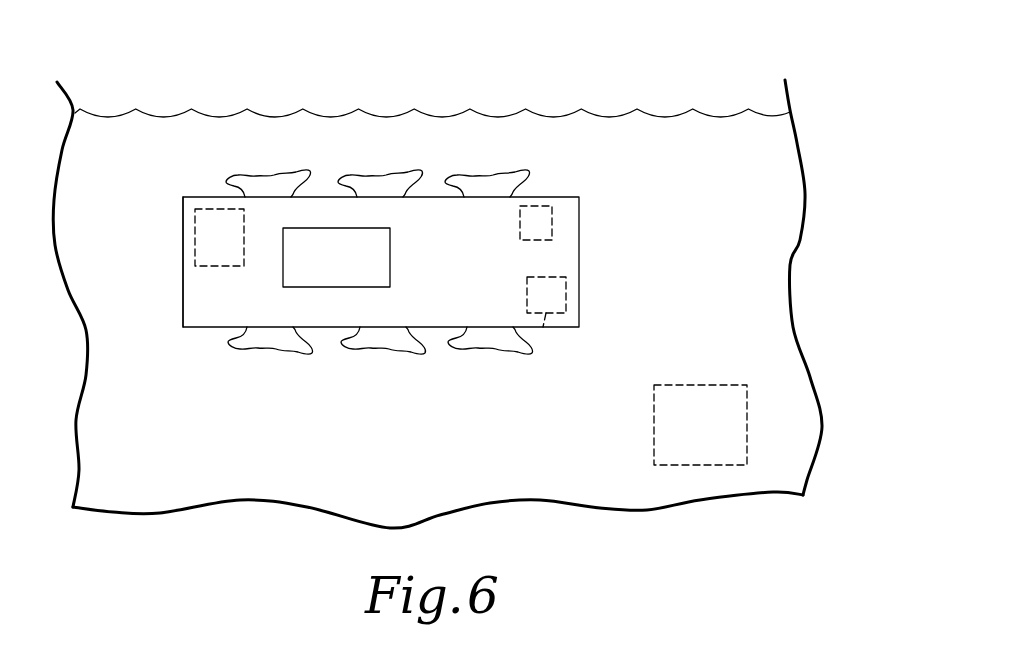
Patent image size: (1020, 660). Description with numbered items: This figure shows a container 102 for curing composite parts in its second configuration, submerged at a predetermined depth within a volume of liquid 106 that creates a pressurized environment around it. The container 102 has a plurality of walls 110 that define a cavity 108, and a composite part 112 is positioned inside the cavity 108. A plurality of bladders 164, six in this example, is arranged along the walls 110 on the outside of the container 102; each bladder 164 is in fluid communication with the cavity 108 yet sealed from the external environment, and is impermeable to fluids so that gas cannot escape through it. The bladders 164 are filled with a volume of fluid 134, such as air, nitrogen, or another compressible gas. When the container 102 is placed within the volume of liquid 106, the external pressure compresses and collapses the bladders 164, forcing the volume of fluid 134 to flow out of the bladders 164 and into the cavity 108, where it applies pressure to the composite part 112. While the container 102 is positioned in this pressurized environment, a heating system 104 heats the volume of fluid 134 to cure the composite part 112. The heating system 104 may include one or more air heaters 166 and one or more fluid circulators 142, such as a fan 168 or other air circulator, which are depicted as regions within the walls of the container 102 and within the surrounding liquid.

The container 102 is at (600, 212).
The heating system 104 is at (210, 242).
The volume of liquid 106 is at (763, 274).
The cavity 108 is at (487, 282).
The walls 110 is at (197, 196).
The composite part 112 is at (386, 247).
The volume of fluid 134 is at (210, 287).
The fluid circulator 142 is at (550, 205).
The bladders 164 is at (477, 174).
The air heater 166 is at (217, 213).
The fan 168 is at (553, 233).